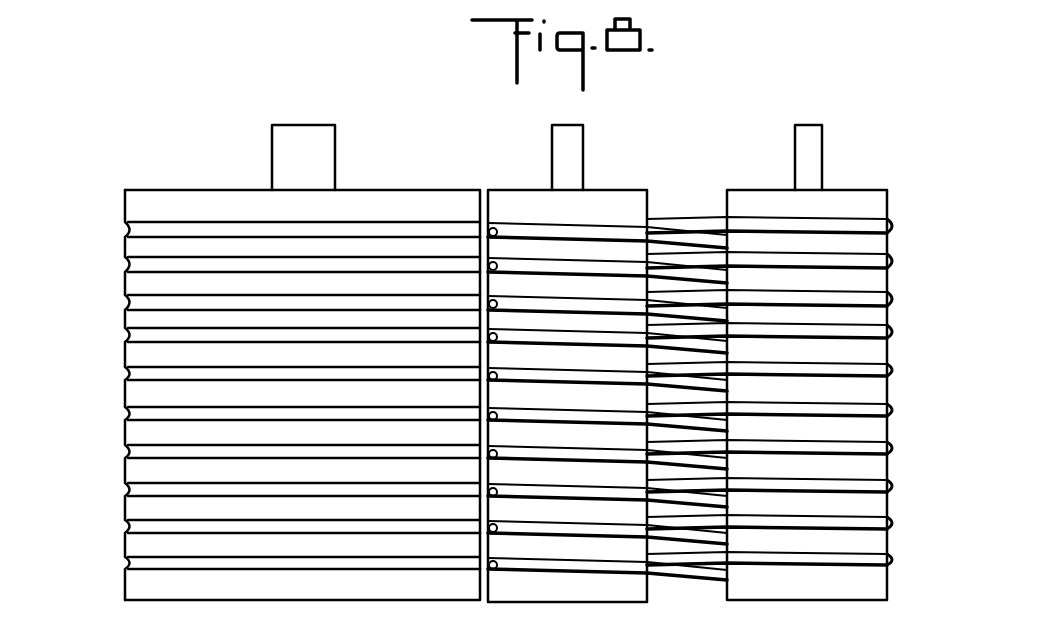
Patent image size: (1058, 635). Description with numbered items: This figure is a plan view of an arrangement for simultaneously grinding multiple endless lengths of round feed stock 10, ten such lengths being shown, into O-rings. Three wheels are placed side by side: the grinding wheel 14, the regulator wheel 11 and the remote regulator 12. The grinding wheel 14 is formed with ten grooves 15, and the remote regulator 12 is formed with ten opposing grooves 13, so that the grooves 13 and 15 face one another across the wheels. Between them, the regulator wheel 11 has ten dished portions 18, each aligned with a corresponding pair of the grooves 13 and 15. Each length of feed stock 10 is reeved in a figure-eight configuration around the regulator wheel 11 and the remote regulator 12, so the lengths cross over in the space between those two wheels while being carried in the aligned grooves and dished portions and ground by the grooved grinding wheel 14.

The feed stock 10 is at (892, 296).
The regulator wheel 11 is at (722, 363).
The remote regulator 12 is at (802, 362).
The grooves 13 is at (890, 350).
The grinding wheel 14 is at (268, 362).
The grooves 15 is at (123, 302).
The dished portions 18 is at (640, 257).